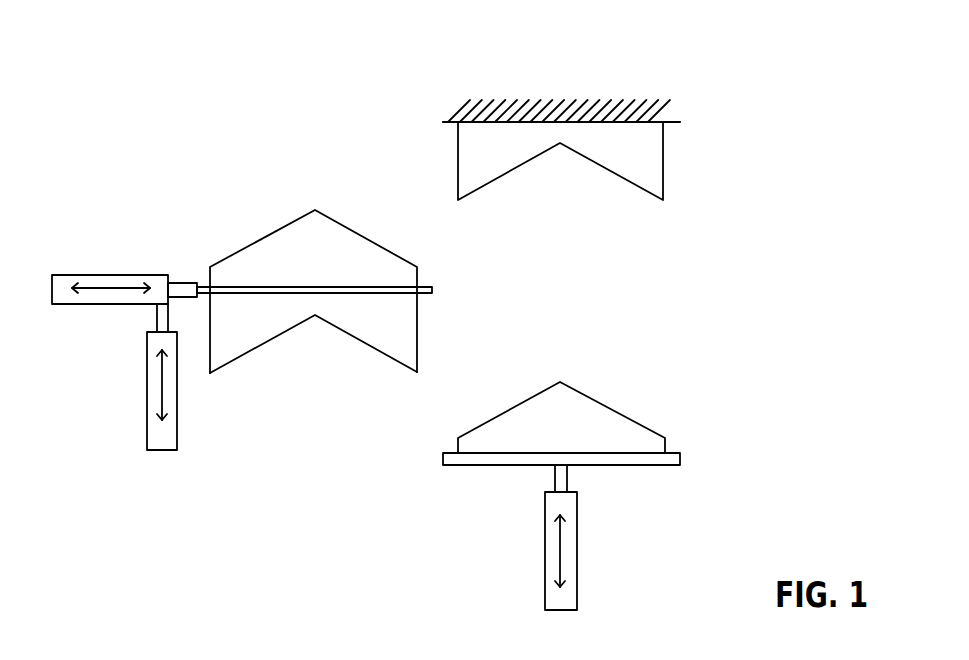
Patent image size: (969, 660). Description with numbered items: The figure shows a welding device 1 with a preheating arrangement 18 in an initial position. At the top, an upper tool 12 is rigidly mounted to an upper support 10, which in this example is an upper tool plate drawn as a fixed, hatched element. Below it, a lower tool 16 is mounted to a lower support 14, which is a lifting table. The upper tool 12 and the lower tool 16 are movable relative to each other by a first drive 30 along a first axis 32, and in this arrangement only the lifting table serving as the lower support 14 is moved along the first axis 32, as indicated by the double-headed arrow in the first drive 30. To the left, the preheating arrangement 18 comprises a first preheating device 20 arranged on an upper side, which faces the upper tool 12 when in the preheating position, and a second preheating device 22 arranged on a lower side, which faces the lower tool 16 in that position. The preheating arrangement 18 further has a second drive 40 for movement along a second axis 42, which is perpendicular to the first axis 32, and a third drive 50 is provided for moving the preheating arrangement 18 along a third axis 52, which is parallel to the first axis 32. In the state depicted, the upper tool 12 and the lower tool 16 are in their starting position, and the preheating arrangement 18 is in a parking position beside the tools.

The welding device 1 is at (813, 105).
The upper support 10 is at (672, 121).
The upper tool 12 is at (652, 160).
The lower support 14 is at (670, 460).
The lower tool 16 is at (625, 435).
The preheating arrangement 18 is at (229, 234).
The first preheating device 20 is at (300, 232).
The second preheating device 22 is at (378, 340).
The first drive 30 is at (578, 558).
The first axis 32 is at (560, 547).
The second drive 40 is at (117, 273).
The second axis 42 is at (102, 292).
The third drive 50 is at (178, 402).
The third axis 52 is at (157, 390).